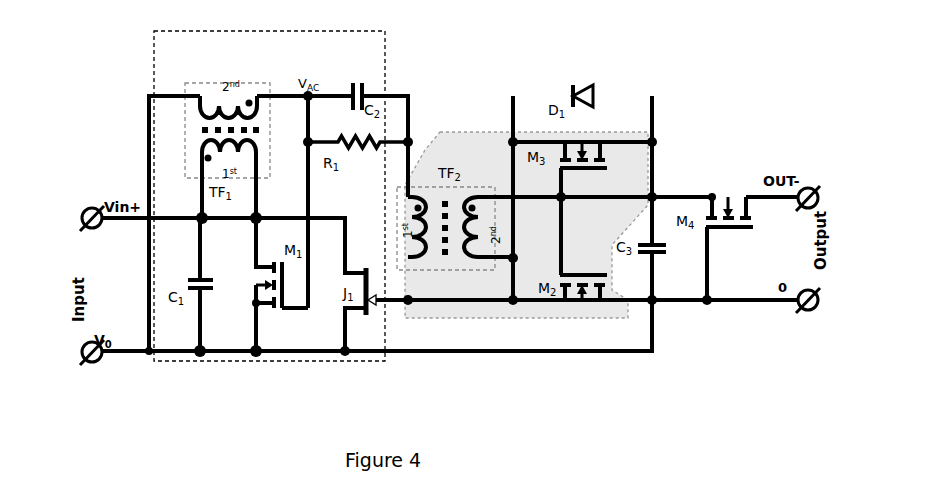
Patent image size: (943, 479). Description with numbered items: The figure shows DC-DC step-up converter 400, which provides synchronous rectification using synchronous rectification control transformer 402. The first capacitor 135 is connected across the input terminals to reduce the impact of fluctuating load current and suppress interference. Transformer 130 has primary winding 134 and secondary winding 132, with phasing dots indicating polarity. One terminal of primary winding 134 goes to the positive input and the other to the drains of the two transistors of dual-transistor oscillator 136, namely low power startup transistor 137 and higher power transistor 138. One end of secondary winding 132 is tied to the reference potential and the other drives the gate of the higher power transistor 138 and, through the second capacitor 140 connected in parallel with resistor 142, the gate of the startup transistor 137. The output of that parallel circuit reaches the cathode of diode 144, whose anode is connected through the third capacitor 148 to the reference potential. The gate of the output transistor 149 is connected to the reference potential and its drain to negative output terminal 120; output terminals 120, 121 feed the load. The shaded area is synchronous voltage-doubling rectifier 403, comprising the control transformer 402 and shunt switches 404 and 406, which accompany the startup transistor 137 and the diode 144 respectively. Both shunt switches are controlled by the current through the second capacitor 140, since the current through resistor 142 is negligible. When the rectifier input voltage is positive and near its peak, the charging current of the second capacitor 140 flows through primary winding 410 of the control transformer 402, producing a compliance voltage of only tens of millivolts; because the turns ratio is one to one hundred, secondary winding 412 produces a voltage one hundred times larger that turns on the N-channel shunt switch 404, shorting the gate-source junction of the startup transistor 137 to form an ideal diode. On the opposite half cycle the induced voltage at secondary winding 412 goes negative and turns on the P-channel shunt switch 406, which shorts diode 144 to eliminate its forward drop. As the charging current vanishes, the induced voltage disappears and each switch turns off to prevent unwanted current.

The negative output terminal 120 is at (815, 190).
The negative output terminal 121 is at (810, 311).
The transformer 130 is at (211, 83).
The secondary winding 132 is at (181, 131).
The primary winding 134 is at (205, 150).
The capacitor C1 135 is at (214, 292).
The dual-transistor oscillator 136 is at (318, 31).
The low power startup transistor J1 137 is at (352, 312).
The higher power transistor M1 138 is at (284, 292).
The capacitor C2 140 is at (362, 82).
The resistor R1 142 is at (339, 152).
The diode D1 144 is at (583, 83).
The capacitor C3 148 is at (668, 251).
The transistor M4 149 is at (720, 197).
The DC-DC step-up converter 400 is at (401, 439).
The synchronous rectification control transformer TF2 402 is at (463, 249).
The synchronous voltage-doubling rectifier 403 is at (490, 148).
The shunt switch M2 404 is at (600, 302).
The shunt switch M3 406 is at (605, 150).
The primary winding 410 is at (420, 255).
The secondary winding 412 is at (478, 250).